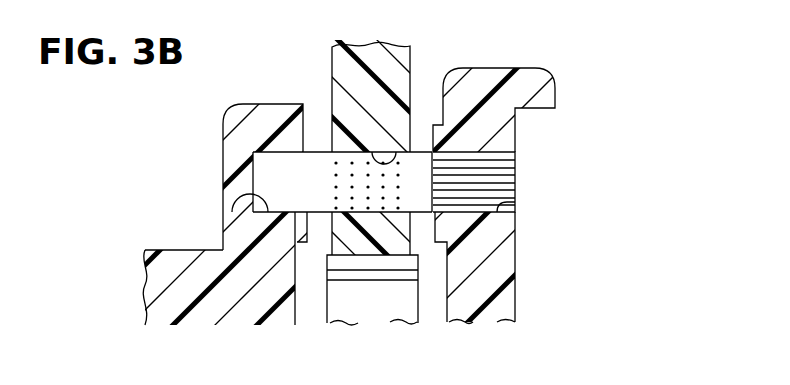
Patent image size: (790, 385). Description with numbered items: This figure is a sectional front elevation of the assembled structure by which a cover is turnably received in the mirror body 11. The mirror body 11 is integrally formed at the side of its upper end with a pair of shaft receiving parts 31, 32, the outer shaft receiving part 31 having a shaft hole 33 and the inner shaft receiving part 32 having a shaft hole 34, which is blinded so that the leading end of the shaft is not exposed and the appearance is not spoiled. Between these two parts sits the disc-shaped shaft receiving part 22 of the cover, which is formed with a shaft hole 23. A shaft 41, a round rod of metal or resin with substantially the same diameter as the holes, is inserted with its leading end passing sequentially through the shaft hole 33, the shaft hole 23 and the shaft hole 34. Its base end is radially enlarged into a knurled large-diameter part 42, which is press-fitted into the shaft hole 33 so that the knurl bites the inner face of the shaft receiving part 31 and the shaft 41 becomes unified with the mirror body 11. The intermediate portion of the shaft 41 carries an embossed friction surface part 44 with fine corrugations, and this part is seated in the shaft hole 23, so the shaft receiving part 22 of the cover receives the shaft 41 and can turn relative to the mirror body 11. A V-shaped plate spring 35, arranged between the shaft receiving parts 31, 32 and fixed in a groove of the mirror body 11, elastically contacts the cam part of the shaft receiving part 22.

The mirror body 11 is at (500, 307).
The shaft receiving part 22 is at (348, 112).
The shaft hole 23 is at (392, 152).
The shaft receiving part 31 is at (485, 243).
The shaft receiving part 32 is at (238, 136).
The shaft hole 33 is at (510, 200).
The shaft hole 34 is at (250, 195).
The plate spring 35 is at (410, 288).
The shaft 41 is at (515, 167).
The large-diameter part 42 is at (497, 181).
The friction surface part 44 is at (374, 200).